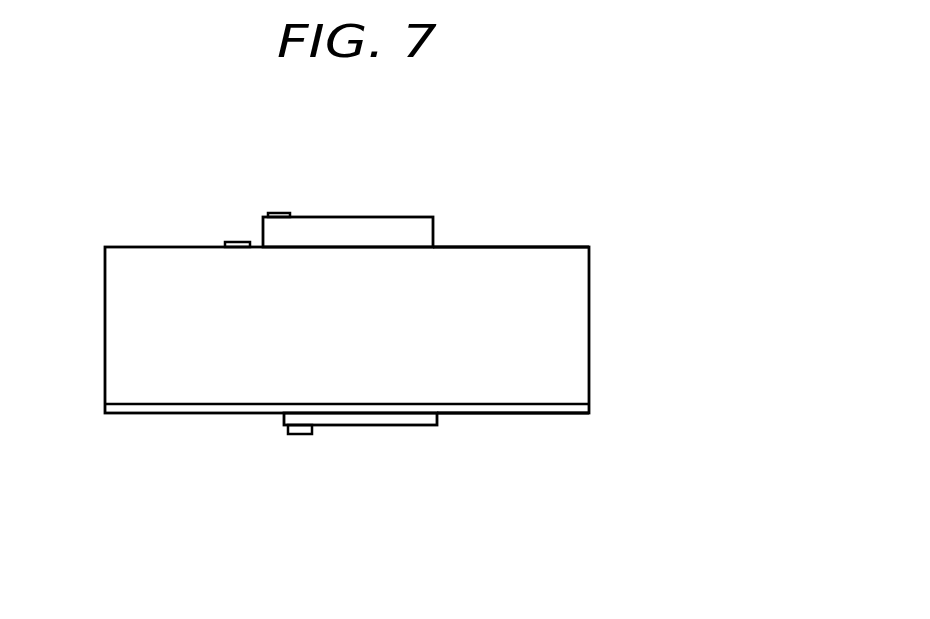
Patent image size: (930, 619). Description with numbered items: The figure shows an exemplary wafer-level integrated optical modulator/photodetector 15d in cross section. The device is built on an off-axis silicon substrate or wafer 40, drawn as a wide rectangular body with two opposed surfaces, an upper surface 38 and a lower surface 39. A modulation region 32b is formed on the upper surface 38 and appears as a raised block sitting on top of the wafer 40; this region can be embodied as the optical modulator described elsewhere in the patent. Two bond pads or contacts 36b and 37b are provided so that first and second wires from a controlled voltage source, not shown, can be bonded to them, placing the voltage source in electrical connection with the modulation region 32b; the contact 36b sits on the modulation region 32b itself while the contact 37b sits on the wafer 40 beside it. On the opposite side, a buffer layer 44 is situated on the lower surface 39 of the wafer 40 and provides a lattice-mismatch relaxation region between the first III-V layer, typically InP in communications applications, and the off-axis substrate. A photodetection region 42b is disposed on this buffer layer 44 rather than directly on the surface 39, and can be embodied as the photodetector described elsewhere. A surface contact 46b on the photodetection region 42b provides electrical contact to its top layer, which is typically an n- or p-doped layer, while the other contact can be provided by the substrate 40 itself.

The wafer-level integrated optical modulator/photodetector 15d is at (212, 109).
The wafer 40 is at (115, 307).
The buffer layer 44 is at (145, 407).
The surface 38 is at (538, 249).
The surface 39 is at (538, 403).
The modulation region 32b is at (393, 230).
The contact 36b is at (277, 213).
The contact 37b is at (235, 242).
The photodetection region 42b is at (377, 420).
The surface contact 46b is at (298, 435).